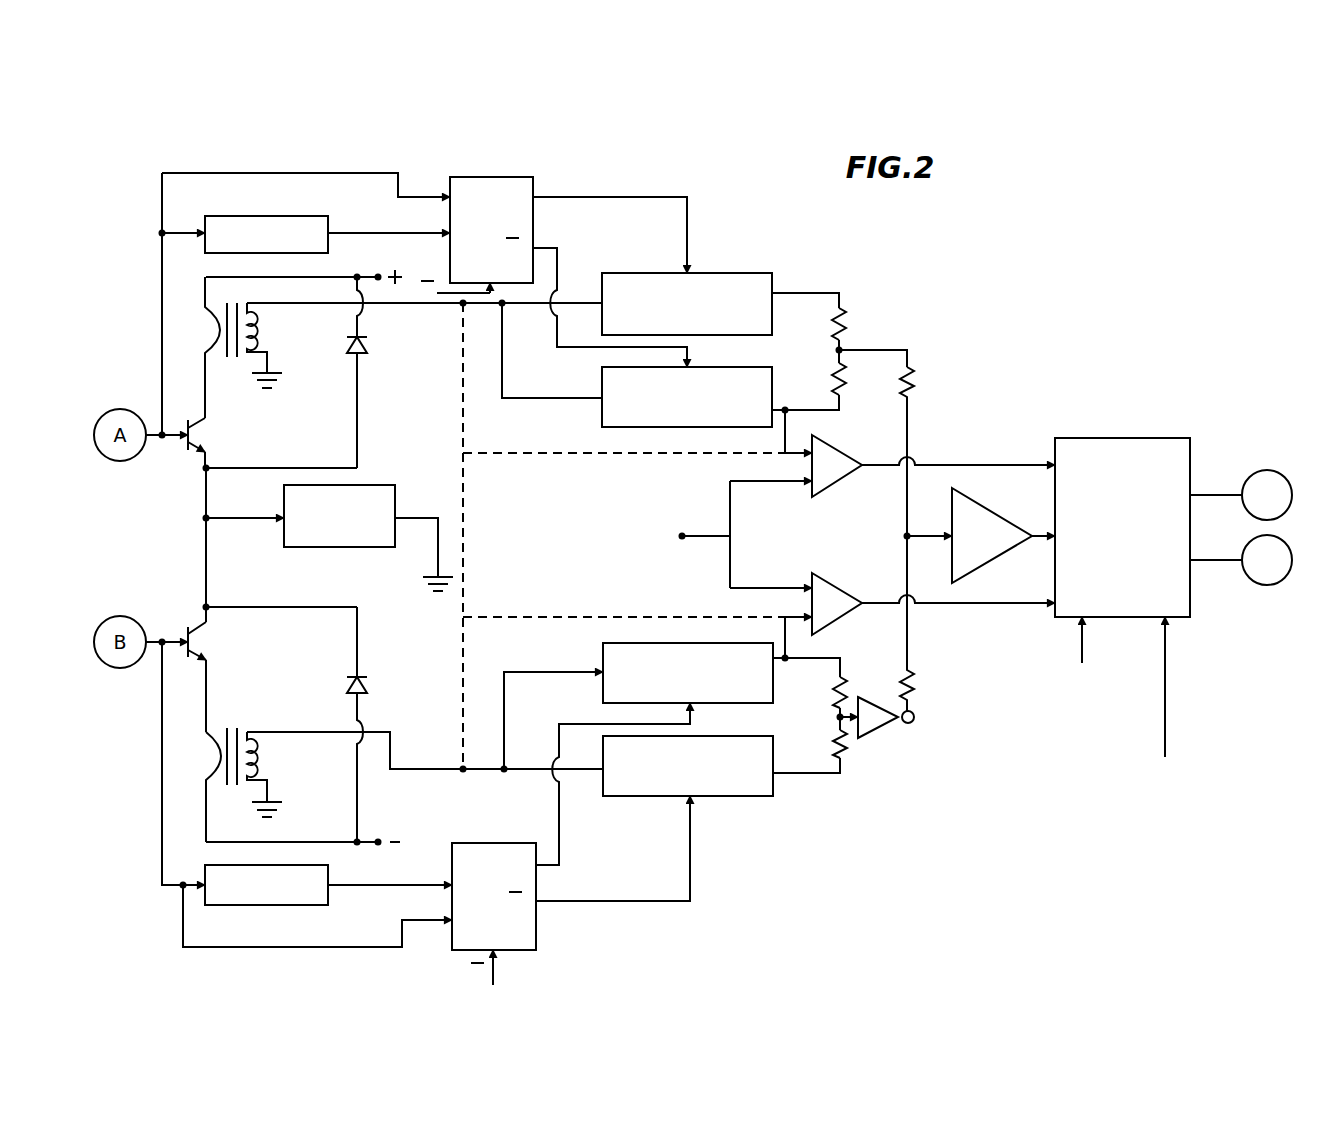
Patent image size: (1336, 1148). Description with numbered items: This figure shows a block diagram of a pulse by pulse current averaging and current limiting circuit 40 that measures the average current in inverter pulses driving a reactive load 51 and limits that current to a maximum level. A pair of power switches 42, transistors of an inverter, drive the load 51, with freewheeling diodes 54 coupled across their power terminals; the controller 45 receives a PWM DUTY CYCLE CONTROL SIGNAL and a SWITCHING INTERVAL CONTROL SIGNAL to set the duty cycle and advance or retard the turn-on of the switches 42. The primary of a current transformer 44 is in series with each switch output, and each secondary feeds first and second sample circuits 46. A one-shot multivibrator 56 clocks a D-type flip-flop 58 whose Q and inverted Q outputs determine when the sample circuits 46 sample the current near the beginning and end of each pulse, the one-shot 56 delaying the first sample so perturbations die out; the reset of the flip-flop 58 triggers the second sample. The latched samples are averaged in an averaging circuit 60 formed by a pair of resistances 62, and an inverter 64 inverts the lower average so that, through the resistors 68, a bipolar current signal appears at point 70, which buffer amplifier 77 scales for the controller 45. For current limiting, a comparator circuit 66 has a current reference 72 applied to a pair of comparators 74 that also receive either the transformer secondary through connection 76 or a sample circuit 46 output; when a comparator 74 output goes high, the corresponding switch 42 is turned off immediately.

The current averaging and current limiting circuit 40 is at (1032, 270).
The power switch 42 is at (184, 452).
The current transformer 44 is at (260, 330).
The controller 45 is at (1162, 644).
The sample circuit 46 is at (713, 273).
The load 51 is at (366, 485).
The freewheeling diode 54 is at (367, 345).
The one-shot multivibrator 56 is at (304, 216).
The bistable circuit 58 is at (505, 177).
The averaging circuit 60 is at (850, 344).
The resistance 62 is at (844, 330).
The inverter 64 is at (905, 755).
The comparator circuit 66 is at (988, 436).
The resistor 68 is at (915, 385).
The point 70 is at (910, 534).
The current reference 72 is at (682, 545).
The comparator 74 is at (838, 484).
The connection 76 is at (525, 455).
The buffer amplifier 77 is at (978, 566).